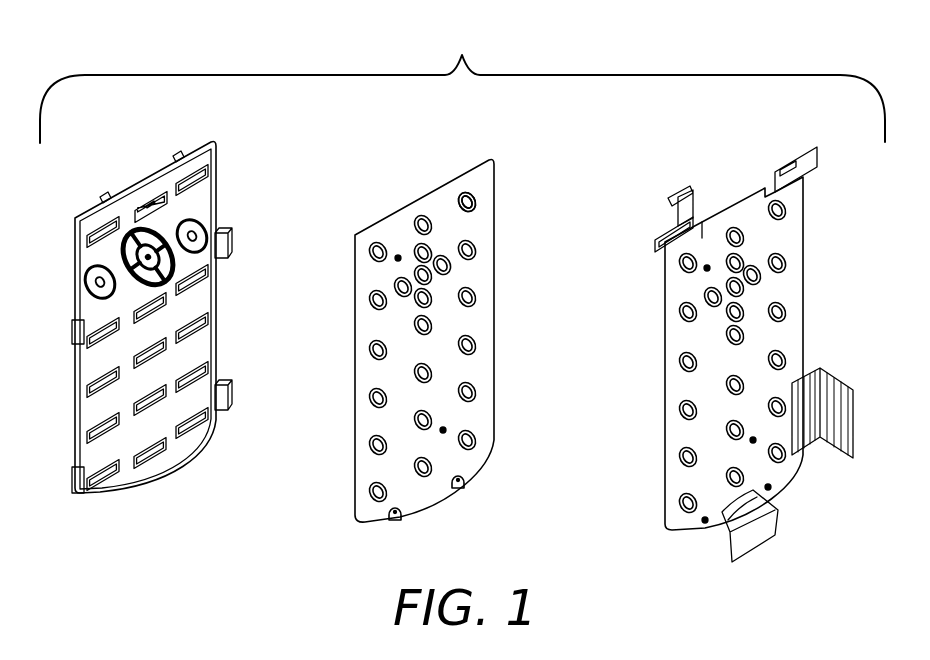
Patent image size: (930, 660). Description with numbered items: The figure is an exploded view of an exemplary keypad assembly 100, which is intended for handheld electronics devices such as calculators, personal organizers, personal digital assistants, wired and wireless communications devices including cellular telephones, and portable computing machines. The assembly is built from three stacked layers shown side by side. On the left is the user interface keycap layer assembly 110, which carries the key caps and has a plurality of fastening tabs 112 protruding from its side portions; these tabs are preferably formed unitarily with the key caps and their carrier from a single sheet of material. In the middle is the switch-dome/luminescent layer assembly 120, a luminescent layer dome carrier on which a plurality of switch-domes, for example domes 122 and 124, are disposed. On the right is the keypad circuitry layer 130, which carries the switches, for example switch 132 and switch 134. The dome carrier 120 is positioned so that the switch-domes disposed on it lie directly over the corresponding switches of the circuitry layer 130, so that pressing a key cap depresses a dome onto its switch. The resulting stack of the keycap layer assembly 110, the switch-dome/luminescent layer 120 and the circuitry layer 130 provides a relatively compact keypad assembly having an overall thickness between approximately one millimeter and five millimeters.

The keypad assembly 100 is at (462, 82).
The user interface keycap layer assembly 110 is at (123, 141).
The tabs 112 is at (233, 243).
The switch-dome/luminescent layer assembly 120 is at (400, 144).
The dome 122 is at (476, 202).
The dome 124 is at (476, 252).
The keypad circuitry layer 130 is at (715, 156).
The switch 132 is at (786, 210).
The switch 134 is at (786, 263).